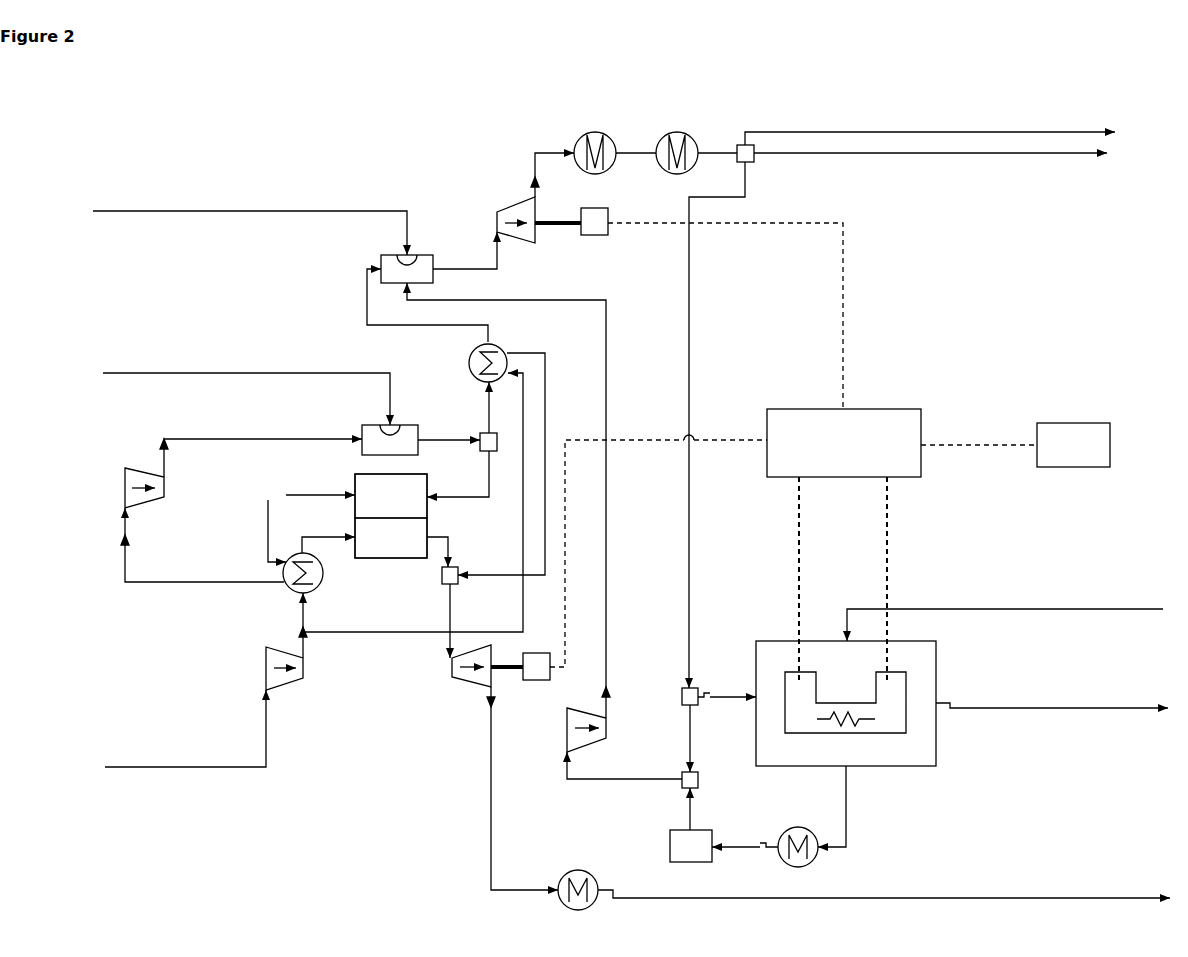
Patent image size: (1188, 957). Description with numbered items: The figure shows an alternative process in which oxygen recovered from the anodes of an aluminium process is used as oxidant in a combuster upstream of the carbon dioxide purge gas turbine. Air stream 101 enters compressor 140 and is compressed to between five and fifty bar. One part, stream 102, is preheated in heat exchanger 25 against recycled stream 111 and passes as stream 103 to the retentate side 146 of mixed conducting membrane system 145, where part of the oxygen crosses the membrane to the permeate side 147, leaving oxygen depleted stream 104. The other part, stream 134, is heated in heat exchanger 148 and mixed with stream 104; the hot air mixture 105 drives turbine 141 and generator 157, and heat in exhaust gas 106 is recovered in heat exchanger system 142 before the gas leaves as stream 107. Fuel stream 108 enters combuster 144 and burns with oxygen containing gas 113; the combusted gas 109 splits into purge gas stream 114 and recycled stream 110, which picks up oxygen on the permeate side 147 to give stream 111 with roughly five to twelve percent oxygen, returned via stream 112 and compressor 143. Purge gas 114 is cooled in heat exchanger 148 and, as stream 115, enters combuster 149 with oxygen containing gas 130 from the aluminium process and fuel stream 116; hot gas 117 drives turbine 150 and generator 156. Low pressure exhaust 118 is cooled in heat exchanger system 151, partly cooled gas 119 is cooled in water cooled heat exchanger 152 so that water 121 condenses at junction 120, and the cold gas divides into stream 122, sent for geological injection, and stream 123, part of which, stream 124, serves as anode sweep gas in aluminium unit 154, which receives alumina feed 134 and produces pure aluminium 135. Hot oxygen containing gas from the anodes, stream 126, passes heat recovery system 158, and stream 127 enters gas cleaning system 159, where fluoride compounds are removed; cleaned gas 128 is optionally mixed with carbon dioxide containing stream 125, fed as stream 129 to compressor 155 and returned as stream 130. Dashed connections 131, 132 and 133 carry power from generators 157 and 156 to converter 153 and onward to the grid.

The heat exchanger 25 is at (313, 577).
The air stream 101 is at (185, 732).
The compressed air stream 102 is at (303, 625).
The heated air stream 103 is at (328, 542).
The oxygen depleted stream 104 is at (442, 549).
The hot air mixture stream 105 is at (450, 612).
The exhaust gas stream 106 is at (519, 788).
The exhaust gas outlet stream 107 is at (884, 897).
The carbon containing fuel stream 108 is at (246, 396).
The hot combusted gas stream 109 is at (457, 442).
The recycled stream 110 is at (458, 477).
The oxygen enriched recycle stream 111 is at (311, 525).
The compressed gas stream 112 is at (202, 548).
The oxygen containing gas stream 113 is at (261, 455).
The purge gas stream 114 is at (489, 407).
The water stream 115 is at (427, 305).
The carbon containing fuel stream 116 is at (250, 230).
The hot combusted gas stream 117 is at (465, 254).
The low pressure exhaust gas stream 118 is at (552, 172).
The partly cooled exhaust gas stream 119 is at (636, 153).
The condensate stream 120 is at (726, 153).
The condensed water stream 121 is at (930, 135).
The cold exhaust gas stream 122 is at (930, 153).
The cold exhaust gas stream 123 is at (711, 425).
The anode sweep gas stream 124 is at (719, 696).
The CO2 containing gas stream 125 is at (690, 738).
The aluminium process off-gas stream 126 is at (837, 806).
The stream to unit 159 127 is at (745, 847).
The cleaned gas stream 128 is at (690, 801).
The stream to compressor 155 129 is at (624, 769).
The oxygen containing gas stream 130 is at (511, 500).
The electrical line from generator 157 131 is at (658, 551).
The electrical line from generator 156 132 is at (725, 313).
The electrical line to grid 133 is at (1015, 445).
The compressed air stream 134 is at (733, 507).
The pure aluminium stream 135 is at (813, 534).
The compressor 140 is at (300, 675).
The turbine 141 is at (459, 672).
The heat exchanger system 142 is at (598, 896).
The compressor 143 is at (147, 499).
The combuster 144 is at (376, 431).
The mixed conducting membrane system 145 is at (391, 530).
The retentate side 146 is at (391, 538).
The permeate side 147 is at (391, 496).
The heat exchanger 148 is at (472, 363).
The combuster 149 is at (395, 259).
The turbine 150 is at (506, 215).
The heat exchanger system 151 is at (595, 142).
The water cooled heat exchanger 152 is at (677, 142).
The AC/DC converter 153 is at (844, 533).
The aluminium process unit 154 is at (866, 703).
The compressor 155 is at (604, 735).
The generator 156 is at (574, 232).
The generator 157 is at (524, 677).
The heat recovery system 158 is at (819, 850).
The gas cleaning system 159 is at (691, 846).